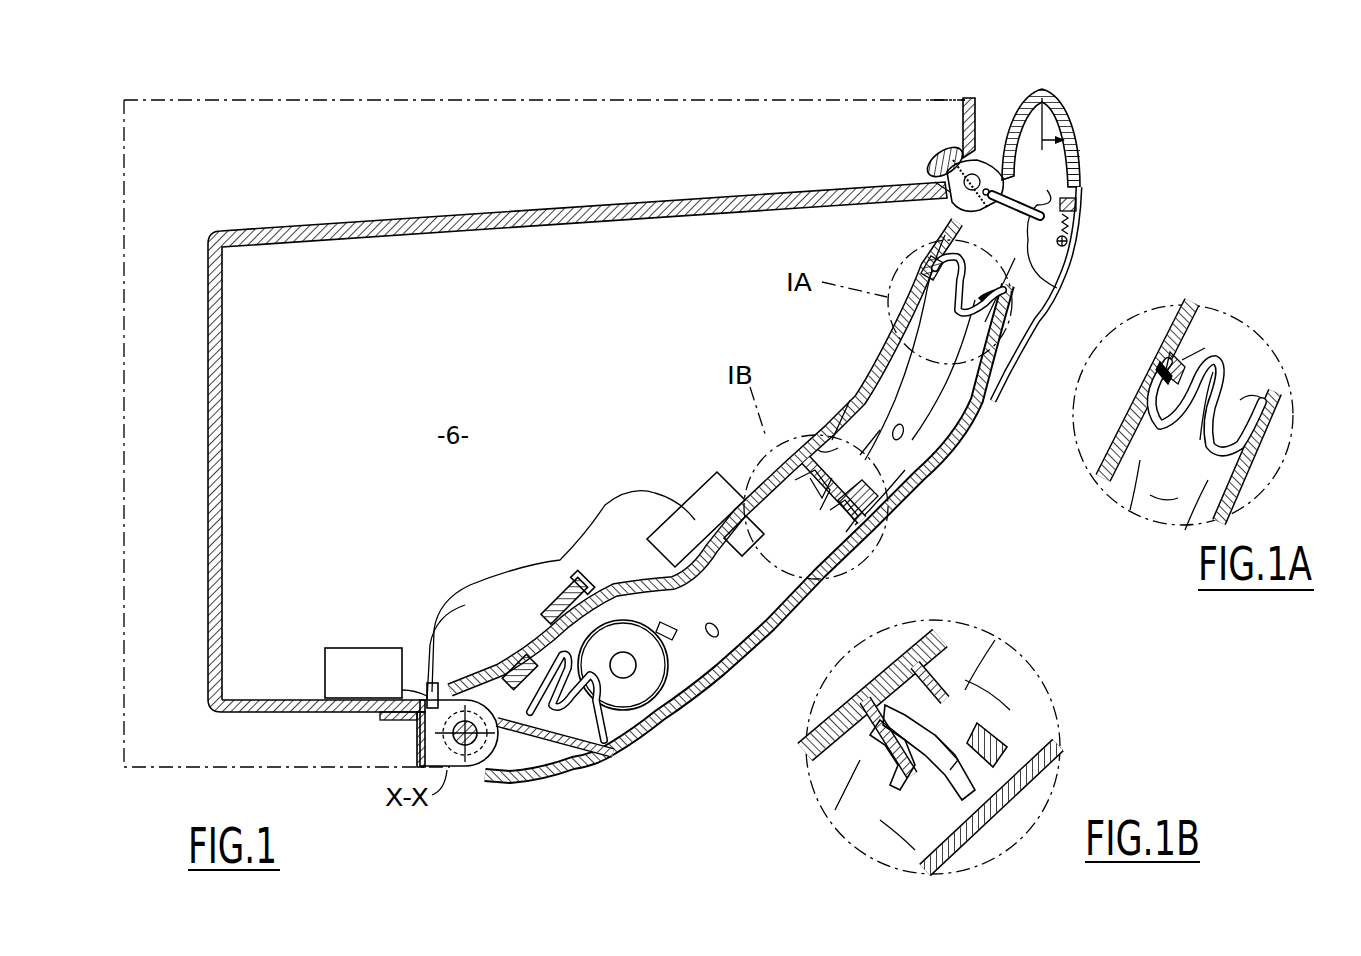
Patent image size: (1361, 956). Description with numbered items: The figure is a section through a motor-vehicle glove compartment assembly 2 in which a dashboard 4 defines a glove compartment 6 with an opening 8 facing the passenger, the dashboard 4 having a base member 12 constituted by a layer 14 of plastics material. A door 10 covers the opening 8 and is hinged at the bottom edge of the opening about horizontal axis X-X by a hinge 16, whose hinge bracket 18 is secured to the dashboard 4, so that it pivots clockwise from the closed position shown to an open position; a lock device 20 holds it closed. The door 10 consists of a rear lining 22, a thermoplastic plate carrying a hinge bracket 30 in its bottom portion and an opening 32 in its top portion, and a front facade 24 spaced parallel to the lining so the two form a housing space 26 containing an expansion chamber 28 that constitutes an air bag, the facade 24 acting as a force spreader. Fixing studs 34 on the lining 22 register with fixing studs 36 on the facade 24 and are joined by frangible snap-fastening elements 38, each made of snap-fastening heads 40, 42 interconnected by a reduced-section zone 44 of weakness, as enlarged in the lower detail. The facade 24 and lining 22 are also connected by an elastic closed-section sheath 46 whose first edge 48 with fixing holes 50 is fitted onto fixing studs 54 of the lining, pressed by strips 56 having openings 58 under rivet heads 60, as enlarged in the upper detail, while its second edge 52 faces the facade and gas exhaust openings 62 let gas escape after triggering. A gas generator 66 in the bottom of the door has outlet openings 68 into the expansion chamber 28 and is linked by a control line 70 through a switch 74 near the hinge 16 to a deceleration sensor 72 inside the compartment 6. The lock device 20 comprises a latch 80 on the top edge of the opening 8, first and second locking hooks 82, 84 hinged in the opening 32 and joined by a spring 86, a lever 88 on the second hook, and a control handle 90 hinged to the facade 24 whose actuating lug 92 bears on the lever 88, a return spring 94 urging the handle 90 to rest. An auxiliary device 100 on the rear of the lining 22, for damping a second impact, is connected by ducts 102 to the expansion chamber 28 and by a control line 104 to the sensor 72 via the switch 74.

In FIG. 1, the glove compartment assembly 2 is at (1150, 100).
In FIG. 1, the dashboard 4 is at (853, 92).
In FIG. 1, the glove compartment 6 is at (544, 433).
In FIG. 1, the opening 8 is at (705, 435).
In FIG. 1, the door 10 is at (672, 736).
In FIG. 1, the base member 12 is at (794, 100).
In FIG. 1, the layer 14 is at (962, 117).
In FIG. 1, the hinge 16 is at (455, 777).
In FIG. 1, the hinge bracket 18 is at (417, 744).
In FIG. 1, the lock device 20 is at (994, 100).
In FIG. 1, the rear lining 22 is at (622, 583).
In FIG. 1A, the rear lining 22 is at (1172, 308).
In FIG. 1, the front facade 24 is at (795, 620).
In FIG. 1A, the front facade 24 is at (1282, 406).
In FIG. 1, the housing space 26 is at (1082, 140).
In FIG. 1, the expansion chamber 28 is at (914, 487).
In FIG. 1, the hinge bracket 30 is at (493, 748).
In FIG. 1, the opening 32 is at (935, 222).
In FIG. 1, the fixing studs 34 is at (840, 443).
In FIG. 1B, the fixing studs 34 is at (936, 686).
In FIG. 1, the fixing studs 36 is at (876, 520).
In FIG. 1B, the fixing studs 36 is at (1015, 752).
In FIG. 1, the frangible snap-fastening elements 38 is at (795, 470).
In FIG. 1B, the frangible snap-fastening elements 38 is at (972, 740).
In FIG. 1B, the snap-fastening head 40 is at (870, 698).
In FIG. 1B, the snap-fastening head 42 is at (992, 815).
In FIG. 1B, the reduced-section zone of weakness 44 is at (900, 780).
In FIG. 1, the sheath 46 is at (700, 718).
In FIG. 1A, the sheath 46 is at (1140, 510).
In FIG. 1B, the sheath 46 is at (1020, 656).
In FIG. 1, the first edge 48 is at (505, 660).
In FIG. 1A, the first edge 48 is at (1180, 352).
In FIG. 1A, the fixing holes 50 is at (1215, 355).
In FIG. 1, the second edge 52 is at (606, 764).
In FIG. 1A, the second edge 52 is at (1270, 442).
In FIG. 1A, the fixing studs 54 is at (1162, 370).
In FIG. 1, the strips 56 is at (958, 266).
In FIG. 1A, the strips 56 is at (1168, 418).
In FIG. 1A, the openings 58 is at (1215, 466).
In FIG. 1A, the rivet heads 60 is at (1220, 380).
In FIG. 1, the gas exhaust openings 62 is at (920, 470).
In FIG. 1, the gas generator 66 is at (668, 666).
In FIG. 1, the outlet openings 68 is at (668, 622).
In FIG. 1, the control line 70 is at (535, 630).
In FIG. 1, the deceleration sensor 72 is at (325, 672).
In FIG. 1, the switch 74 is at (427, 690).
In FIG. 1, the latch 80 is at (940, 161).
In FIG. 1, the first locking hook 82 is at (945, 198).
In FIG. 1, the second locking hook 84 is at (985, 170).
In FIG. 1, the spring 86 is at (1022, 205).
In FIG. 1, the lever 88 is at (1038, 192).
In FIG. 1, the control handle 90 is at (1060, 276).
In FIG. 1, the actuating lug 92 is at (1070, 198).
In FIG. 1, the return spring 94 is at (1076, 208).
In FIG. 1, the auxiliary device 100 is at (705, 486).
In FIG. 1, the ducts 102 is at (742, 580).
In FIG. 1, the control line 104 is at (475, 578).